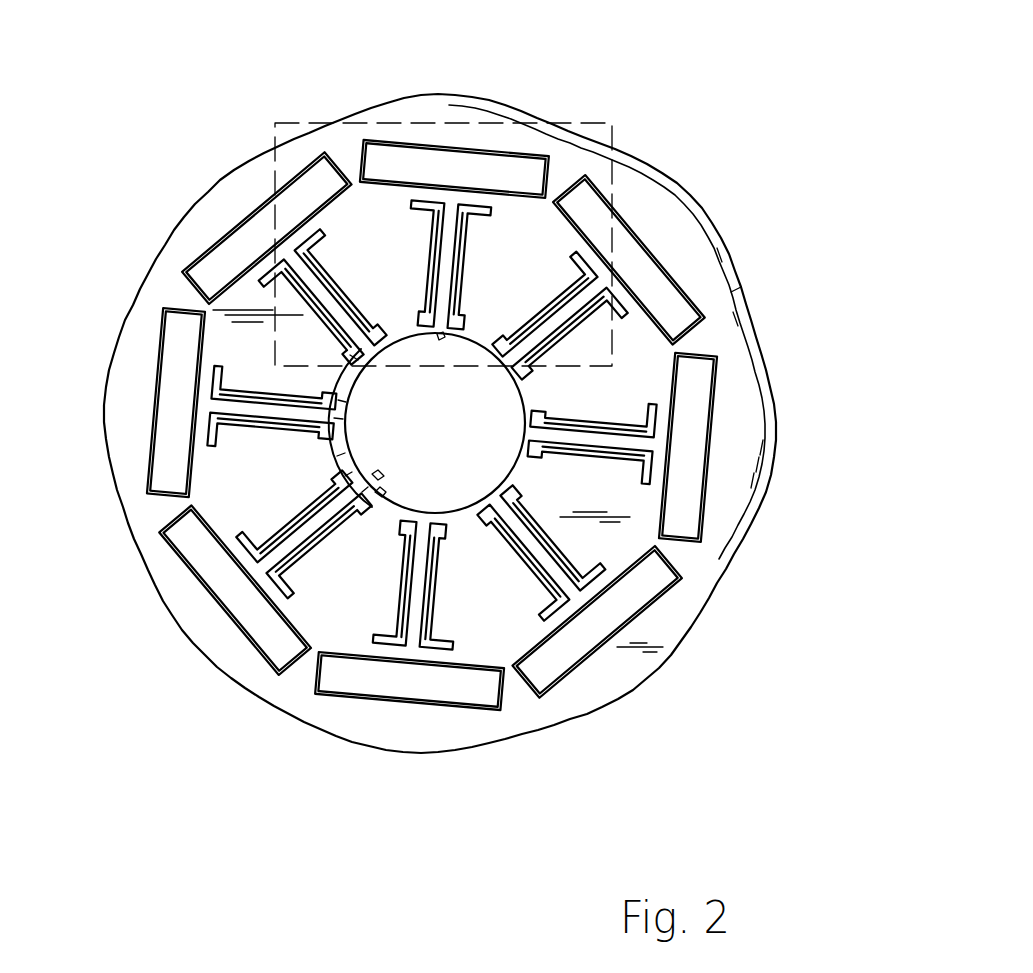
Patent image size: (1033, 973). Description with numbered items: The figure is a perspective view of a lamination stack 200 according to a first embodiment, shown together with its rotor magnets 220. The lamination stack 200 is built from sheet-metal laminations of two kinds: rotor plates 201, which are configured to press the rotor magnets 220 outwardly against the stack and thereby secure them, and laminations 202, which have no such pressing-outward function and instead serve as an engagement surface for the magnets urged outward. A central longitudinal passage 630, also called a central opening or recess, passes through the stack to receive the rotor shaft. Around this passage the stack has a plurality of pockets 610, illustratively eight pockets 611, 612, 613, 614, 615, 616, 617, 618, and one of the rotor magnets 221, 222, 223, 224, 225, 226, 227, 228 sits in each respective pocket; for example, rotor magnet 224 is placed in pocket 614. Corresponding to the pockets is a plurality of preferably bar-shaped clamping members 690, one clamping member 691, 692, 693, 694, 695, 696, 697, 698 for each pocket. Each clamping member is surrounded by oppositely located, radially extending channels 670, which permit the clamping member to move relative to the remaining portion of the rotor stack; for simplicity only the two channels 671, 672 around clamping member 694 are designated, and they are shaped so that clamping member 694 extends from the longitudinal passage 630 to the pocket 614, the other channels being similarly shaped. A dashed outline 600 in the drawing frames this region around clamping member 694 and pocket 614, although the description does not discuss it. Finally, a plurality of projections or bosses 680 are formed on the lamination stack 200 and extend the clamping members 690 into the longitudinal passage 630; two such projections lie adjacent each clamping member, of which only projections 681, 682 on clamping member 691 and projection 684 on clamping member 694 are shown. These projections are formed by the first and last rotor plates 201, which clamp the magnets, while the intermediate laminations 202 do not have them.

The lamination stack 200 is at (189, 99).
The rotor plates 201 is at (697, 398).
The laminations 202 is at (765, 432).
The rotor magnets 220 is at (728, 330).
The rotor magnet 221 is at (255, 615).
The rotor magnet 222 is at (165, 492).
The rotor magnet 223 is at (262, 232).
The rotor magnet 224 is at (397, 168).
The rotor magnet 225 is at (652, 282).
The rotor magnet 226 is at (712, 400).
The rotor magnet 227 is at (620, 622).
The rotor magnet 228 is at (377, 693).
The detail region 600 is at (612, 130).
The plurality of pockets 610 is at (260, 656).
The pocket 611 is at (218, 575).
The pocket 612 is at (160, 432).
The pocket 613 is at (222, 258).
The pocket 614 is at (440, 157).
The pocket 615 is at (672, 258).
The pocket 616 is at (740, 472).
The pocket 617 is at (632, 603).
The pocket 618 is at (440, 700).
The longitudinal passage 630 is at (347, 450).
The channels 670 is at (399, 615).
The channel 671 is at (434, 293).
The channel 672 is at (460, 292).
The projections 680 is at (379, 470).
The projection 681 is at (380, 498).
The projection 682 is at (378, 470).
The projection 684 is at (436, 339).
The clamping members 690 is at (452, 199).
The clamping member 691 is at (280, 547).
The clamping member 692 is at (226, 396).
The clamping member 693 is at (348, 238).
The clamping member 694 is at (447, 237).
The clamping member 695 is at (650, 260).
The clamping member 696 is at (610, 443).
The clamping member 697 is at (590, 630).
The clamping member 698 is at (413, 611).